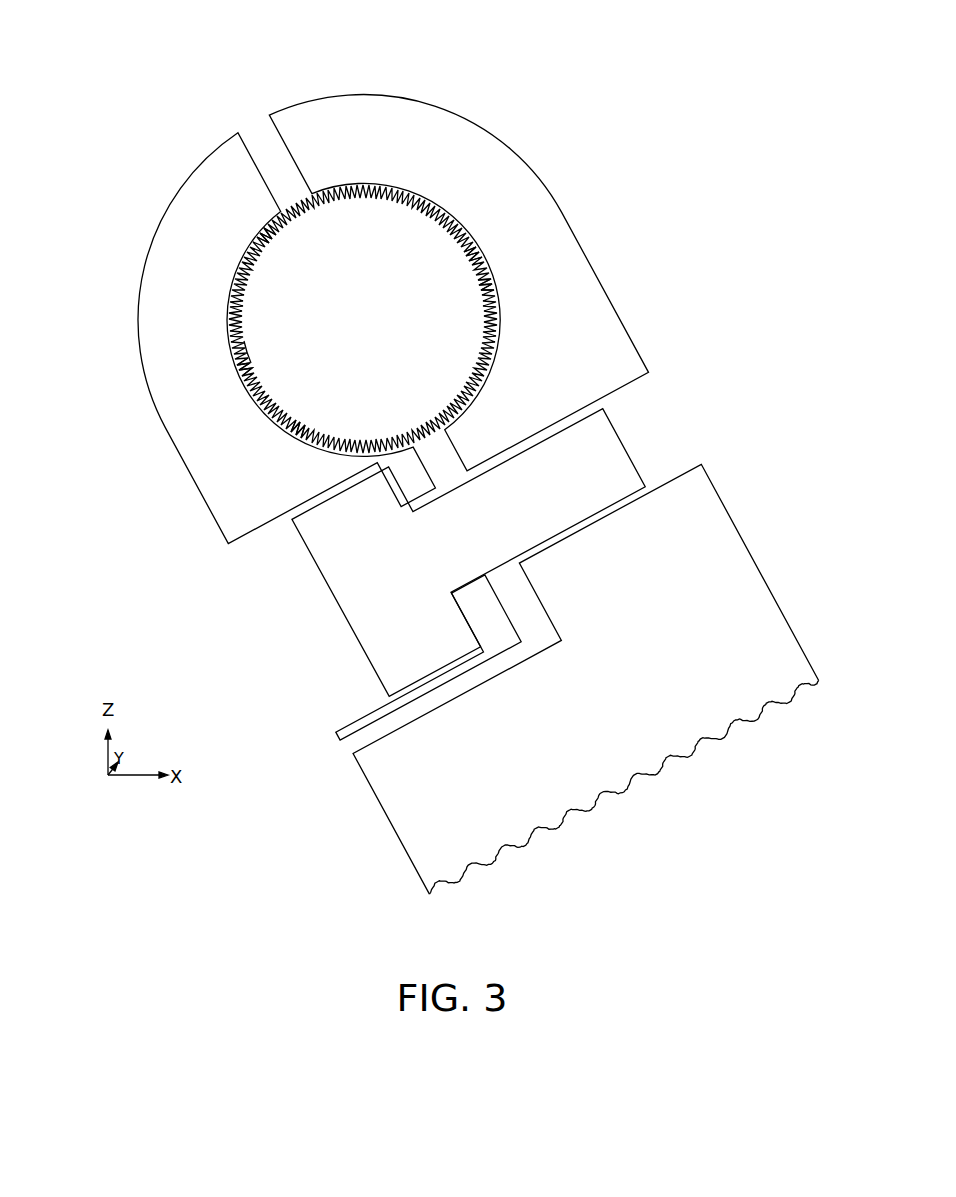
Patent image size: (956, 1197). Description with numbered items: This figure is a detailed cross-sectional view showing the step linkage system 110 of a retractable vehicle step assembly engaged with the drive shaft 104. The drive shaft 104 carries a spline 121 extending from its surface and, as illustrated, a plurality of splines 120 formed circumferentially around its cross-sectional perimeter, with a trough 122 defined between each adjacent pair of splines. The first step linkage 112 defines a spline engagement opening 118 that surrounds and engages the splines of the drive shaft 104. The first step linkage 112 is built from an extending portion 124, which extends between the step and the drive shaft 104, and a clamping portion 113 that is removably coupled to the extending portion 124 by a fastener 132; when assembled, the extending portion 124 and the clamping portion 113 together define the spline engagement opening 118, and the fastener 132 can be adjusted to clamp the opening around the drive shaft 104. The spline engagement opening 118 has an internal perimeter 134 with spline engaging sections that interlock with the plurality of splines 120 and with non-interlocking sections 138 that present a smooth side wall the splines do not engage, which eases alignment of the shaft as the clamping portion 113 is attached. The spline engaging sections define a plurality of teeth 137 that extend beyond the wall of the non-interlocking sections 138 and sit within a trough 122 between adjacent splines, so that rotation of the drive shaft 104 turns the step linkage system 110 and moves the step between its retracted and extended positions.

The step linkage system 110 is at (450, 453).
The first step linkage 112 is at (393, 301).
The clamping portion 113 is at (188, 183).
The plurality of splines 120 is at (458, 244).
The drive shaft 104 is at (482, 234).
The internal perimeter 134 is at (276, 236).
The teeth 137 is at (275, 358).
The spline engagement opening 118 is at (236, 379).
The non-interlocking sections 138 is at (308, 432).
The trough 122 is at (452, 254).
The spline 121 is at (488, 282).
The fastener 132 is at (343, 622).
The extending portion 124 is at (772, 590).